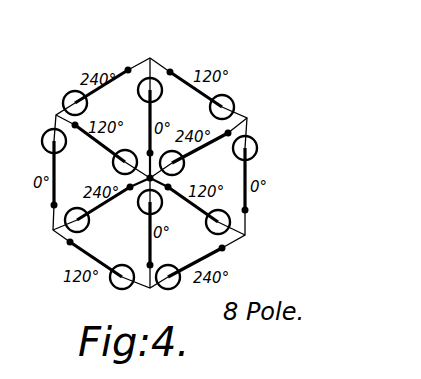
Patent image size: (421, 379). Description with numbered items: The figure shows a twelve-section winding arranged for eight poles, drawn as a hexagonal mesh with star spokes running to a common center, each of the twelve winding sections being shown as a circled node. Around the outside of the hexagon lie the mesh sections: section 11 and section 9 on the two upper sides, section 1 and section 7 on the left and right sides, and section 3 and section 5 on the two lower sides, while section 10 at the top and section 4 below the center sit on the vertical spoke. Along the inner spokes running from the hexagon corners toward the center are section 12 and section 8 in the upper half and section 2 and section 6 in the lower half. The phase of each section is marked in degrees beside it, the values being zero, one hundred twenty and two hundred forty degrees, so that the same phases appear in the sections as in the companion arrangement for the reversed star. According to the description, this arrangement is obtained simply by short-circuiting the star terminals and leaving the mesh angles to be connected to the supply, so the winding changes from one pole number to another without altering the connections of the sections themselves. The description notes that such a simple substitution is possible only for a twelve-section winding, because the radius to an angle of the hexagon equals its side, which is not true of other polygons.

The winding section 1 is at (54, 141).
The winding section 2 is at (77, 220).
The winding section 3 is at (122, 277).
The winding section 4 is at (150, 202).
The winding section 5 is at (168, 277).
The winding section 6 is at (218, 222).
The winding section 7 is at (245, 148).
The winding section 8 is at (172, 163).
The winding section 9 is at (222, 107).
The winding section 10 is at (150, 90).
The winding section 11 is at (75, 103).
The winding section 12 is at (125, 162).